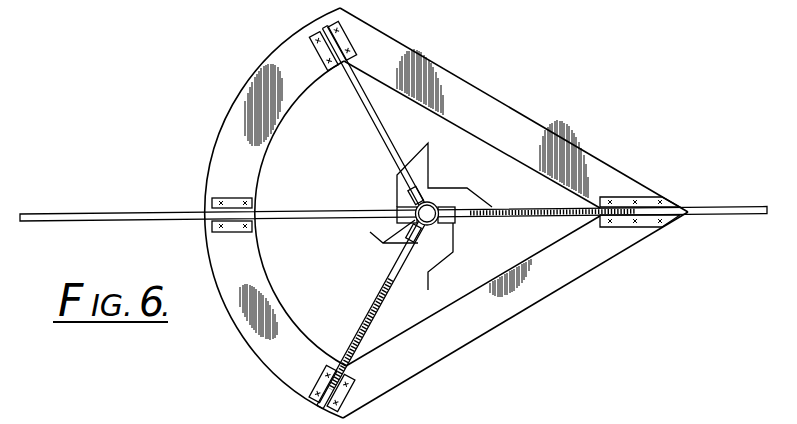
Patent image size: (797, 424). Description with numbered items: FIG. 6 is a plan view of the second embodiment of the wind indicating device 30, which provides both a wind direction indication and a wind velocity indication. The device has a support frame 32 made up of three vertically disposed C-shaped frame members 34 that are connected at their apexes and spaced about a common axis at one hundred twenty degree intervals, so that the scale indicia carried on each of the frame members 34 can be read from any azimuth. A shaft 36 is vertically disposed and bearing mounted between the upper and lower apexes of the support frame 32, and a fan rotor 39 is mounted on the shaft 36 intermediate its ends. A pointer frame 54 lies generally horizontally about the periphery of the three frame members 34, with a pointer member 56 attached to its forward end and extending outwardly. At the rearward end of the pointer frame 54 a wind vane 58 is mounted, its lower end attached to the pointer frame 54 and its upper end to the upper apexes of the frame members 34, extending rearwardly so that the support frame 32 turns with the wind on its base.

The wind indicating device 30 is at (543, 119).
The support frame 32 is at (368, 345).
The C-shaped frame members 34 is at (378, 137).
The shaft 36 is at (767, 413).
The fan rotor 39 is at (429, 161).
The pointer frame 54 is at (523, 310).
The pointer member 56 is at (744, 214).
The wind vane 58 is at (109, 213).